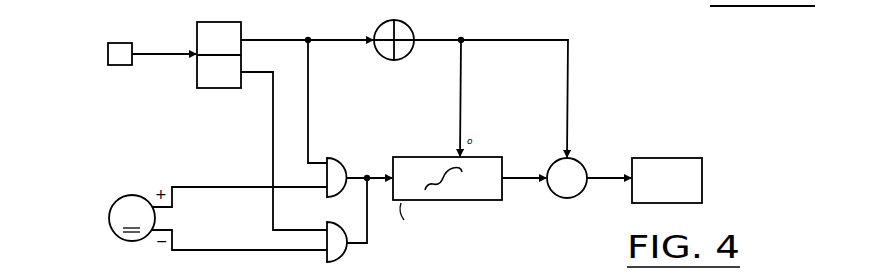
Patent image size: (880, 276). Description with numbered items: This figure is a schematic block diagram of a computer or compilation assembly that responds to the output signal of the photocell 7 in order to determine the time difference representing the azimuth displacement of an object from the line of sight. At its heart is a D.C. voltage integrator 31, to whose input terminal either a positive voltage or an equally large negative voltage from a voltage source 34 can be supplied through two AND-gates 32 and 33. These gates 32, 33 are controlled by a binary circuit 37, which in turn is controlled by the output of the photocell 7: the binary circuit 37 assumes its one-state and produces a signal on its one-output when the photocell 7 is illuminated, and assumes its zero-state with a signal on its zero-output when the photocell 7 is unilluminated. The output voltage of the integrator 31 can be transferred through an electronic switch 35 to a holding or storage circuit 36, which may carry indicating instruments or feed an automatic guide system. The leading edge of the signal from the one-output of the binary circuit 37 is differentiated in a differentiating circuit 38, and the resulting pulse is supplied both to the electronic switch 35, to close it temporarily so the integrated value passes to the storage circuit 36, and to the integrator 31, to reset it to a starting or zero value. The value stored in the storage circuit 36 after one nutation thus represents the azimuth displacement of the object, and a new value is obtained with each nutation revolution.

The photocell 7 is at (119, 47).
The binary circuit 37 is at (238, 26).
The differentiating circuit 38 is at (402, 25).
The AND-gate 32 is at (335, 170).
The AND-gate 33 is at (339, 251).
The voltage source 34 is at (134, 197).
The D.C. voltage integrator 31 is at (488, 158).
The electronic switch 35 is at (571, 170).
The storage circuit 36 is at (688, 160).